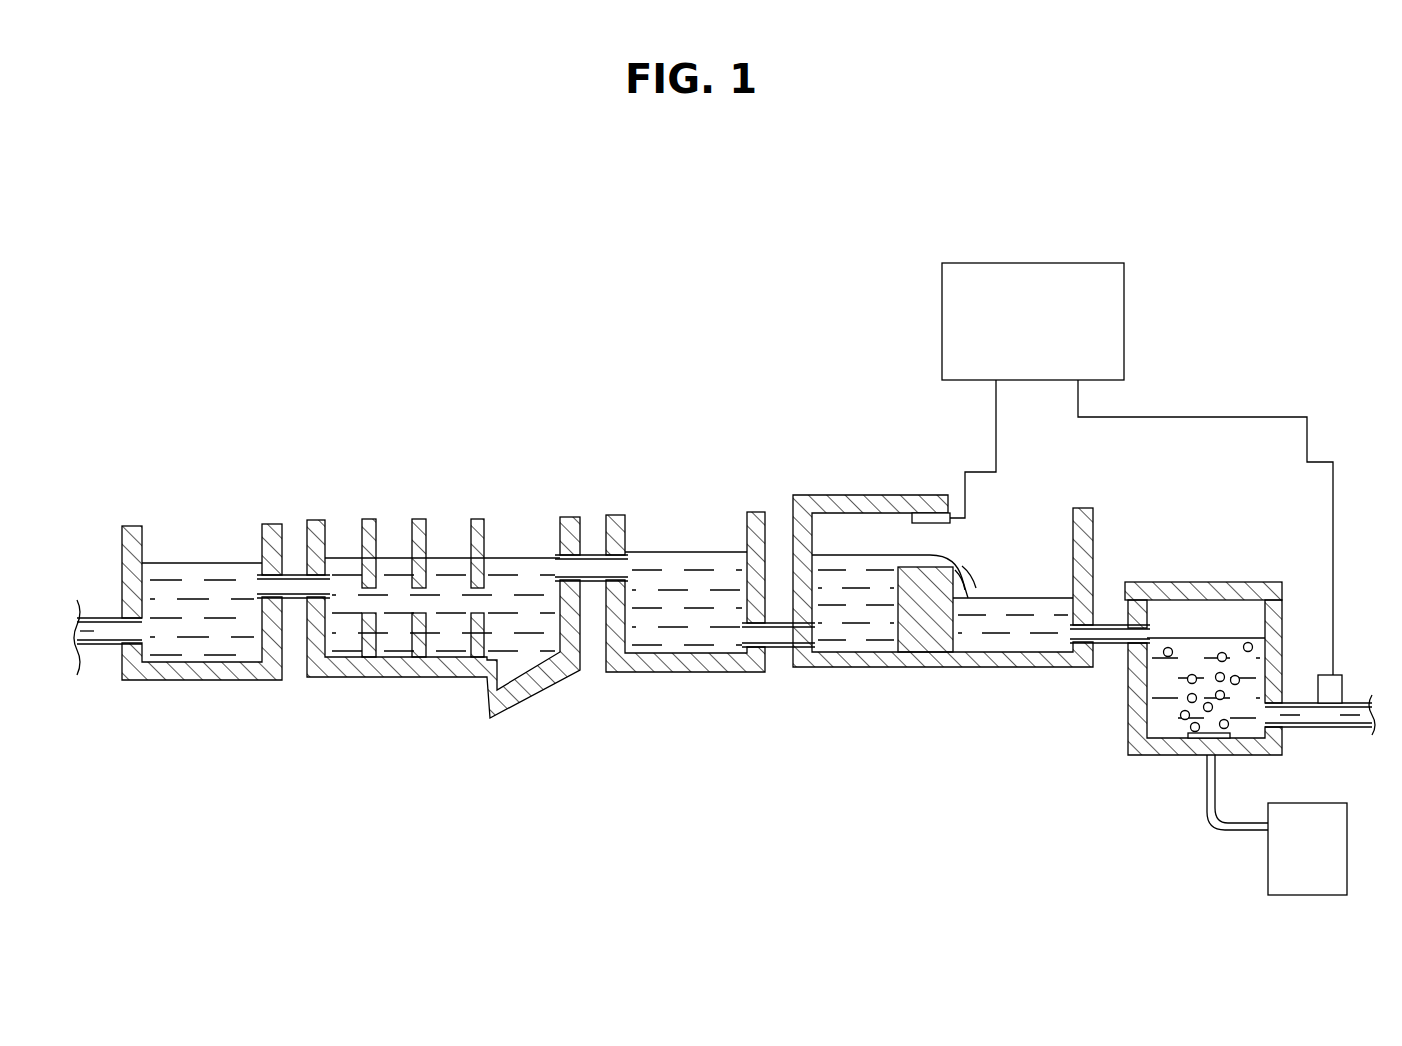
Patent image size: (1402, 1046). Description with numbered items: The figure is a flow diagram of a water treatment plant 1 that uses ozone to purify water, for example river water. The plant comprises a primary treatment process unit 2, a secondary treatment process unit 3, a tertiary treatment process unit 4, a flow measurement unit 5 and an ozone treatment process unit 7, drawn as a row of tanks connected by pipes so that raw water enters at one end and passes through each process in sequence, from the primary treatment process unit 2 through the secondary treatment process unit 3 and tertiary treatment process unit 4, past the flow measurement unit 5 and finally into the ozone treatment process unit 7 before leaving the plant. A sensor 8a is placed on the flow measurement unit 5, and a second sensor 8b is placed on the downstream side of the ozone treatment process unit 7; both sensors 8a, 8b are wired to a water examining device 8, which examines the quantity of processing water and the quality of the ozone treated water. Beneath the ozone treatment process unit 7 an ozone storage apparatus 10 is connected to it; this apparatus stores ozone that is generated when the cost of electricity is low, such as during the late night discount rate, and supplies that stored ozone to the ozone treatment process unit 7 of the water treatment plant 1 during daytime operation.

The water treatment plant 1 is at (704, 282).
The primary treatment process unit 2 is at (207, 530).
The secondary treatment process unit 3 is at (440, 490).
The tertiary treatment process unit 4 is at (682, 498).
The flow measurement unit 5 is at (868, 477).
The ozone treatment process unit 7 is at (1193, 570).
The water examining device 8 is at (1058, 358).
The sensor 8a is at (950, 518).
The sensor 8b is at (1335, 684).
The ozone storage apparatus 10 is at (1278, 862).